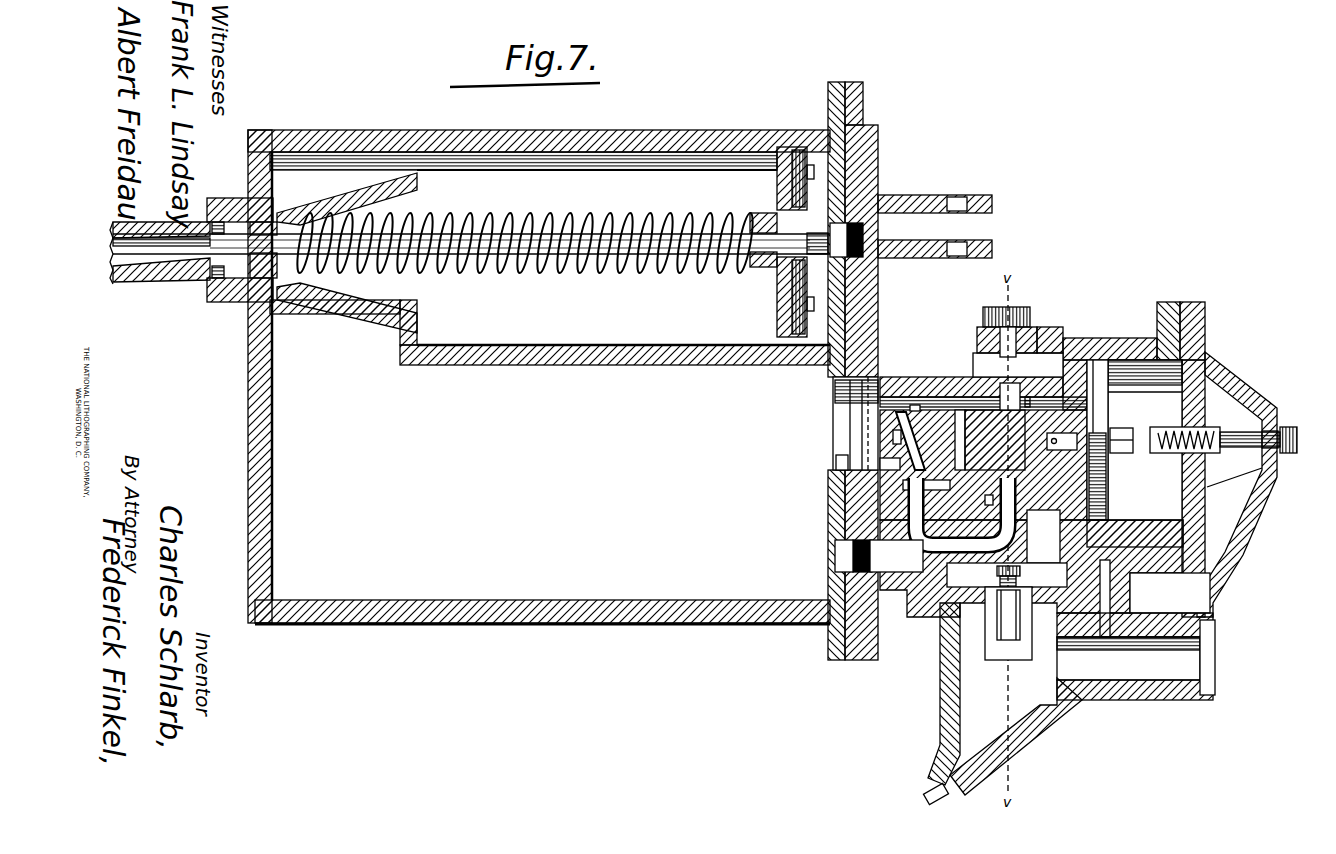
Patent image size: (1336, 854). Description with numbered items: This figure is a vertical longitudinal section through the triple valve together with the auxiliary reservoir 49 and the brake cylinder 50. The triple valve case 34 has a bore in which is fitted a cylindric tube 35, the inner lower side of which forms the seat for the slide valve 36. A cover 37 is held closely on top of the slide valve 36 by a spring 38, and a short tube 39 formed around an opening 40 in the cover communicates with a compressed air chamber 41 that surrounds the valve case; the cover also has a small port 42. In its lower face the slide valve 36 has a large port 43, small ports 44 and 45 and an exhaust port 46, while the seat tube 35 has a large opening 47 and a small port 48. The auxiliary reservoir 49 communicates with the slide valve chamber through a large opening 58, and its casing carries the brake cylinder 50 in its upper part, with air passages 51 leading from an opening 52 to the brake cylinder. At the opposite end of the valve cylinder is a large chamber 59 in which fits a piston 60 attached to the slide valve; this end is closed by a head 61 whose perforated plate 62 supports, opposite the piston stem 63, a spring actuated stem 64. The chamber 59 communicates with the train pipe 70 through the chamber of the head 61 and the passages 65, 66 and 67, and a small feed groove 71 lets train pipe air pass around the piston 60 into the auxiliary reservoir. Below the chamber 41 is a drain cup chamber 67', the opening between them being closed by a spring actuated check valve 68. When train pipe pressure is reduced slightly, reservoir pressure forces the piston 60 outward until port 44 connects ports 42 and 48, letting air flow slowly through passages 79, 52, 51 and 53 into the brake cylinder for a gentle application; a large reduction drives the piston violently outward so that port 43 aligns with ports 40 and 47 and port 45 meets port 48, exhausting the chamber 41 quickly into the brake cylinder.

The triple valve case 34 is at (898, 377).
The cylindric tube 35 is at (1035, 405).
The slide valve 36 is at (893, 440).
The cover 37 is at (836, 408).
The spring 38 is at (957, 400).
The short tube 39 is at (1018, 365).
The opening 40 is at (995, 440).
The compressed air chamber 41 is at (1042, 365).
The small port 42 is at (916, 408).
The large port 43 is at (920, 443).
The small port 44 is at (850, 432).
The small port 45 is at (888, 470).
The exhaust port 46 is at (1049, 448).
The large opening 47 is at (982, 507).
The small port 48 is at (935, 493).
The auxiliary reservoir 49 is at (539, 377).
The brake cylinder 50 is at (561, 242).
The air passages 51 is at (882, 205).
The opening 52 is at (896, 556).
The passage 53 is at (880, 272).
The large opening 58 is at (838, 460).
The large chamber 59 is at (1145, 440).
The piston 60 is at (1100, 500).
The head 61 is at (1246, 400).
The perforated plate 62 is at (1207, 356).
The stem 63 is at (1124, 452).
The spring actuated stem 64 is at (1170, 455).
The passage 65 is at (1234, 506).
The passage 66 is at (1150, 576).
The passage 67 is at (1096, 616).
The drain cup chamber 67' is at (1002, 704).
The spring actuated check-valve 68 is at (1000, 662).
The train pipe 70 is at (1136, 656).
The feed-groove 71 is at (1108, 524).
The passage 79 is at (962, 515).